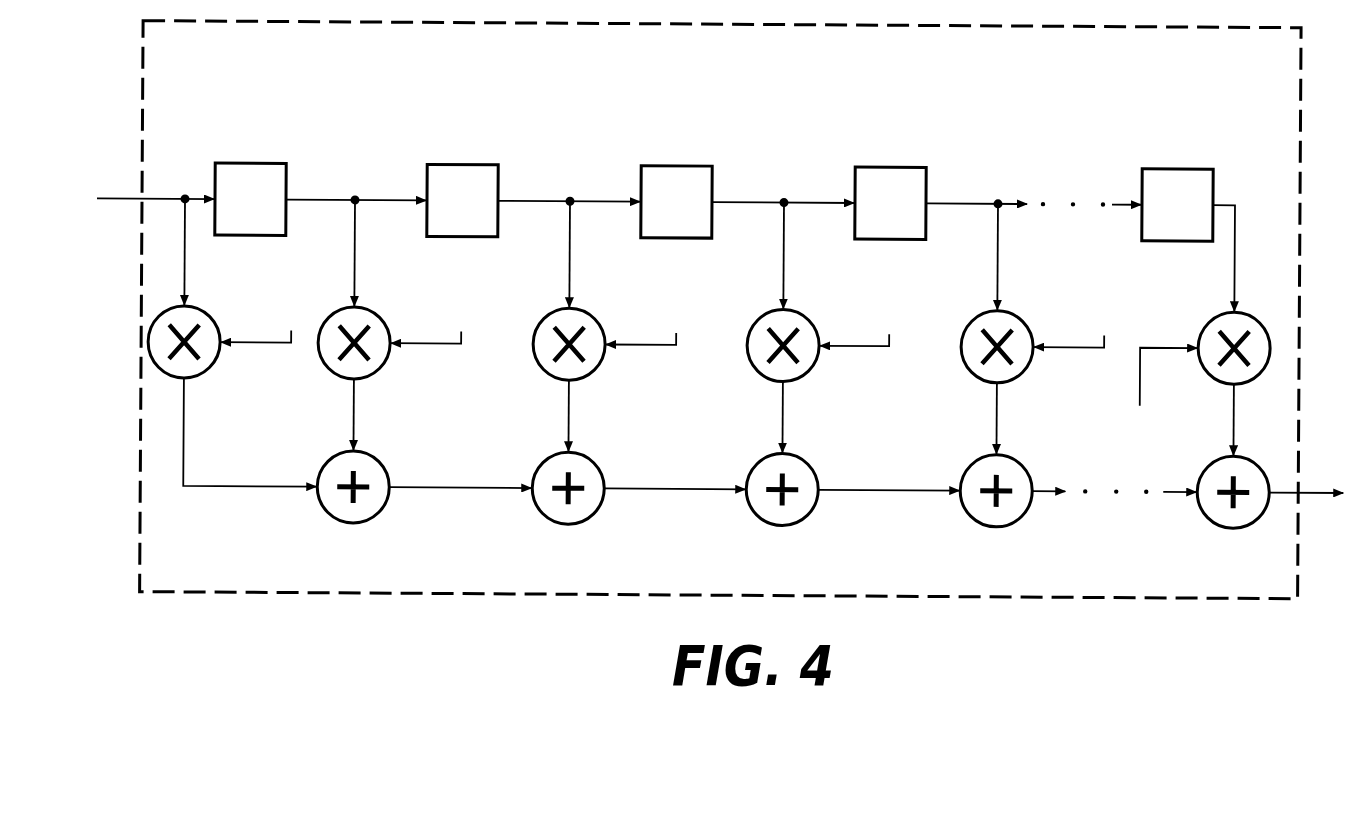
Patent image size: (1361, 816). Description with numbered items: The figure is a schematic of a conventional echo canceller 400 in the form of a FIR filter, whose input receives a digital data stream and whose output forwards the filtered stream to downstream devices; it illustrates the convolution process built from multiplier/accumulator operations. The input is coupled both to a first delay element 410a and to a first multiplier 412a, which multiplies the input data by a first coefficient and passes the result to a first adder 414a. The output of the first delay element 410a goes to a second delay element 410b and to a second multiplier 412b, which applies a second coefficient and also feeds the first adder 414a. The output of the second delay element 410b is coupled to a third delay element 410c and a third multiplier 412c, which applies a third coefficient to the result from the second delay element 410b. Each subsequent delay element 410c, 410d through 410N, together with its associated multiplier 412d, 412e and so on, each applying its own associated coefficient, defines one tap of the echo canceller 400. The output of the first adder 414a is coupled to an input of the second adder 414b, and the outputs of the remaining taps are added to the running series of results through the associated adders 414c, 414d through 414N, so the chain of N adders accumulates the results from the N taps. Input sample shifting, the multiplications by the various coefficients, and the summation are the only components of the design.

The conventional echo canceller 400 is at (223, 61).
The first delay element 410a is at (243, 163).
The second delay element 410b is at (455, 163).
The third delay element 410c is at (670, 163).
The subsequent delay element 410d is at (882, 163).
The Nth delay element 410N is at (1157, 164).
The first multiplier 412a is at (198, 308).
The second multiplier 412b is at (370, 308).
The third multiplier 412c is at (585, 308).
The associated multiplier 412d is at (799, 308).
The associated multiplier 412e is at (1013, 308).
The first adder 414a is at (377, 452).
The second adder 414b is at (592, 452).
The associated adder 414c is at (806, 452).
The associated adder 414d is at (1020, 452).
The Nth adder 414N is at (1202, 508).